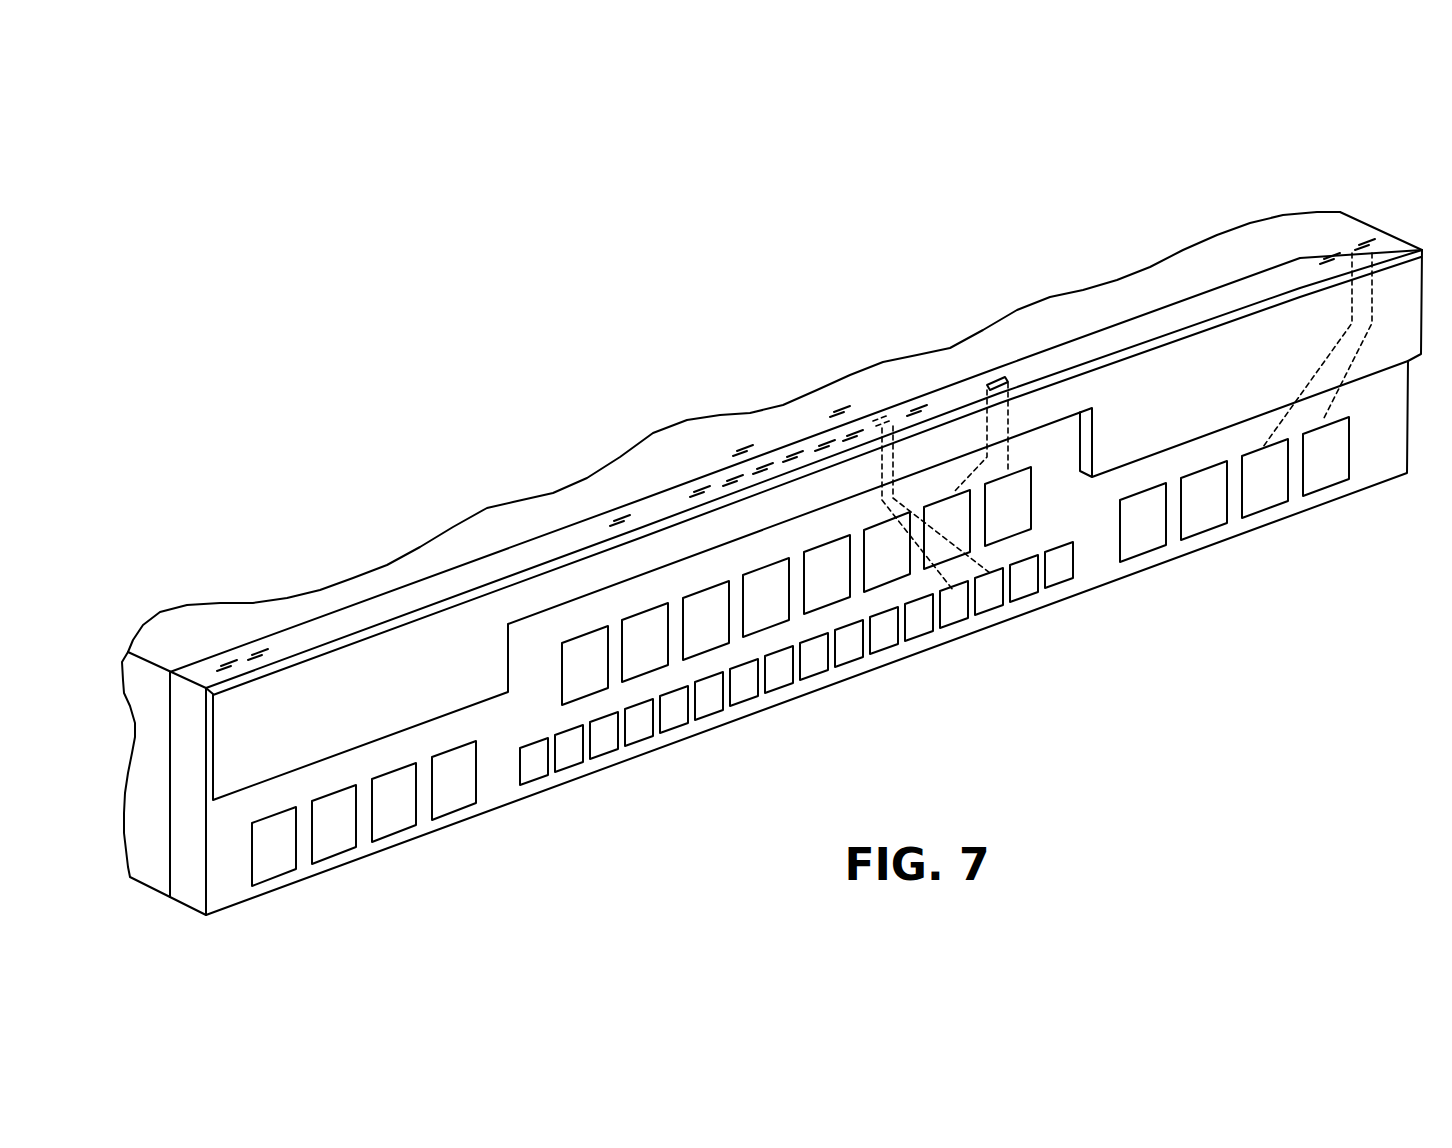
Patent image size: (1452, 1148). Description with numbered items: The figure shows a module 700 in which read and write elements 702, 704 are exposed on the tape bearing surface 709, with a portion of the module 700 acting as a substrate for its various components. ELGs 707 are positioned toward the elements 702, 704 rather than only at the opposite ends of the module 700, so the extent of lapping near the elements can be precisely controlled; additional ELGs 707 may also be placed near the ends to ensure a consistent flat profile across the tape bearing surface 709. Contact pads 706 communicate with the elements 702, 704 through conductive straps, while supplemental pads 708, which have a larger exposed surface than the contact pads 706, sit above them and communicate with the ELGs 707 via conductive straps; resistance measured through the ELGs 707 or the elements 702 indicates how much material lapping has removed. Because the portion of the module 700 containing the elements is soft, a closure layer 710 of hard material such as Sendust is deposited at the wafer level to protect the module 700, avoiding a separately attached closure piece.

The module 700 is at (503, 373).
The read element 702 is at (882, 423).
The write element 704 is at (926, 414).
The contact pads 706 is at (935, 642).
The ELGs 707 is at (742, 450).
The supplemental pads 708 is at (1033, 520).
The tape bearing surface 709 is at (1150, 333).
The closure layer 710 is at (393, 623).